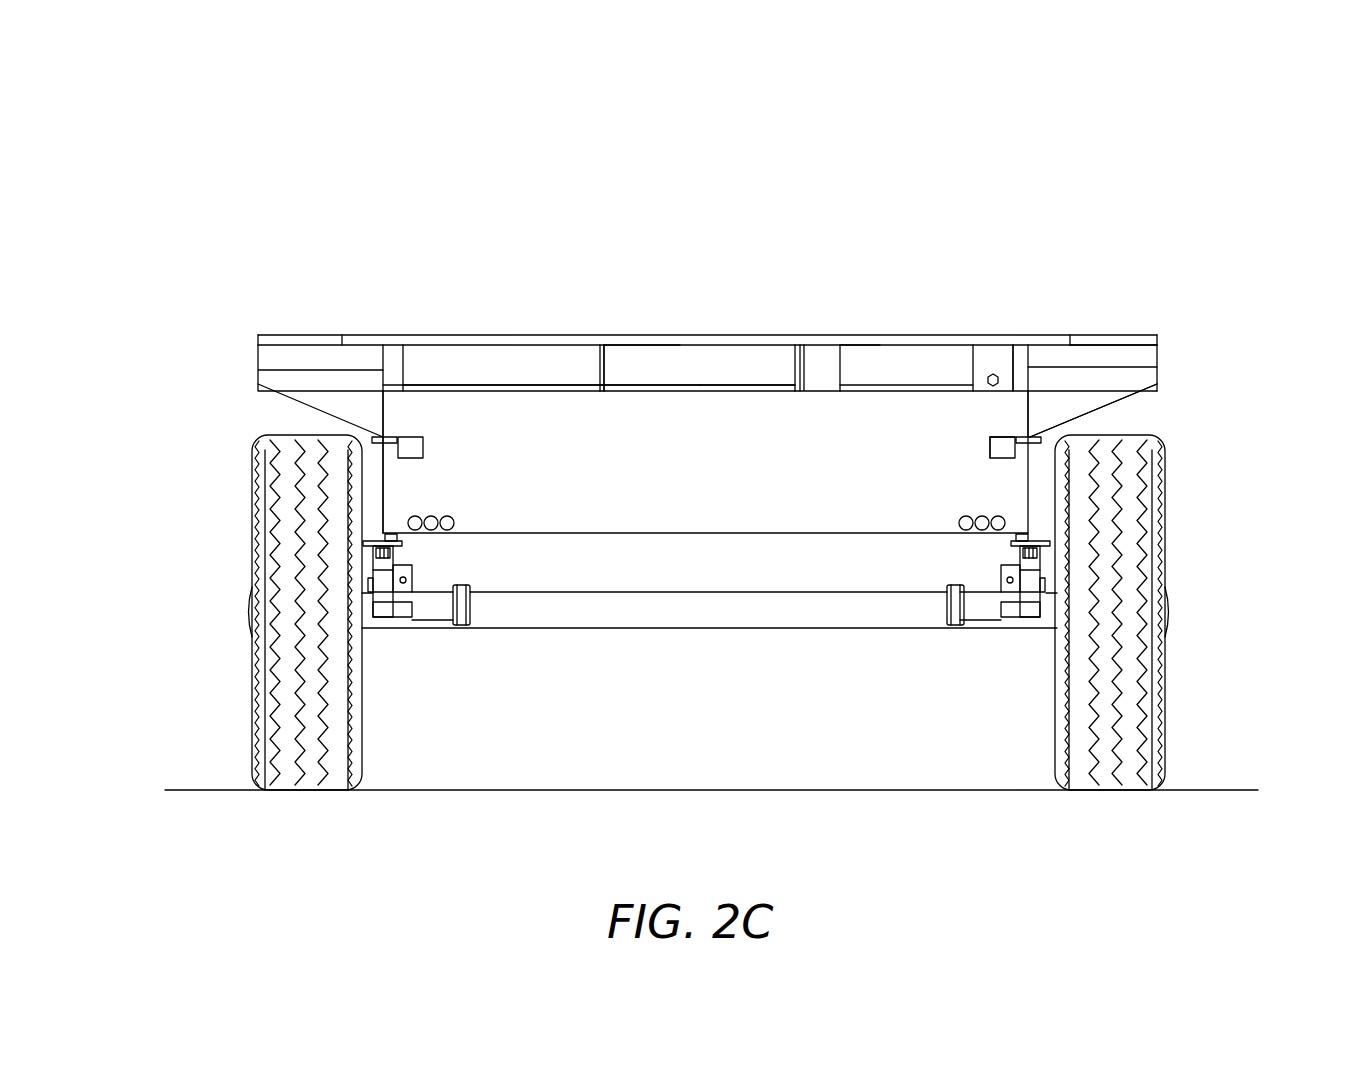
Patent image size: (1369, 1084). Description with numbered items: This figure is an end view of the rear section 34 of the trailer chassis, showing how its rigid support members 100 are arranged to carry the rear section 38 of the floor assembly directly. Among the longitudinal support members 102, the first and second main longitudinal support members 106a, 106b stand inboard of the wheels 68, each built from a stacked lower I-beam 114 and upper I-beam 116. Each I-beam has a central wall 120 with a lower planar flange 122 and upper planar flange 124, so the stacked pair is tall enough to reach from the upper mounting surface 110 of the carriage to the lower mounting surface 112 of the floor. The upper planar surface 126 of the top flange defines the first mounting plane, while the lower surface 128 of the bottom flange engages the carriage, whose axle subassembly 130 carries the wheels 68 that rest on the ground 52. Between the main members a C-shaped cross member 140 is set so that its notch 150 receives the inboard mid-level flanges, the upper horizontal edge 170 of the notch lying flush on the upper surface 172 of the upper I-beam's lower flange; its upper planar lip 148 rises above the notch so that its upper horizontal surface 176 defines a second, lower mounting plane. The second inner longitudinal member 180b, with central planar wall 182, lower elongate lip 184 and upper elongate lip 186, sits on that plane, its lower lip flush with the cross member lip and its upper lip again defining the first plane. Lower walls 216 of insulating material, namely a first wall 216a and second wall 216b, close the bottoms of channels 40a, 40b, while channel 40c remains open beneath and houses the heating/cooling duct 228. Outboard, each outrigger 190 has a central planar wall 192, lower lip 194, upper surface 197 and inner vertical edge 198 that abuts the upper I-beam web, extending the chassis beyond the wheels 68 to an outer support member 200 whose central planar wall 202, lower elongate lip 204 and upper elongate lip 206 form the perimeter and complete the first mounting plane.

The rear section of the chassis 34 is at (342, 185).
The rigid support members 100 is at (704, 200).
The longitudinal support members 102 is at (810, 225).
The rear section of the floor assembly 38 is at (925, 338).
The channel 40a is at (523, 378).
The channel 40b is at (723, 378).
The channel 40c is at (931, 378).
The ground surface 52 is at (823, 793).
The wheels 68 is at (252, 688).
The first main longitudinal support member 106a is at (386, 418).
The second main longitudinal support member 106b is at (1030, 348).
The upper mounting surface 110 is at (399, 537).
The lower mounting surface 112 is at (393, 337).
The lower I-beam 114 is at (386, 512).
The upper I-beam 116 is at (478, 338).
The central wall 120 is at (409, 340).
The lower planar flange 122 is at (318, 391).
The upper planar flange 124 is at (374, 338).
The upper planar surface 126 is at (384, 340).
The lower surface 128 is at (395, 548).
The axle subassembly 130 is at (750, 610).
The cross member 140 is at (720, 507).
The upper planar lip 148 is at (853, 392).
The notch 150 is at (990, 450).
The upper horizontal edge 170 is at (992, 440).
The upper surface 172 is at (1022, 437).
The upper horizontal surface 176 is at (830, 338).
The second inner longitudinal member 180b is at (578, 338).
The central planar wall 182 is at (658, 338).
The lower elongate lip 184 is at (603, 392).
The upper elongate lip 186 is at (623, 338).
The outrigger 190 is at (273, 357).
The central planar wall 192 is at (1080, 388).
The lower lip 194 is at (1037, 336).
The upper surface 197 is at (1127, 340).
The inner vertical edge 198 is at (1038, 303).
The outer support member 200 is at (1157, 360).
The central planar wall 202 is at (1157, 375).
The lower elongate lip 204 is at (1143, 387).
The upper elongate lip 206 is at (1157, 335).
The lower wall 216 is at (697, 392).
The first wall 216a is at (497, 392).
The second wall 216b is at (615, 391).
The heating/cooling duct 228 is at (863, 338).